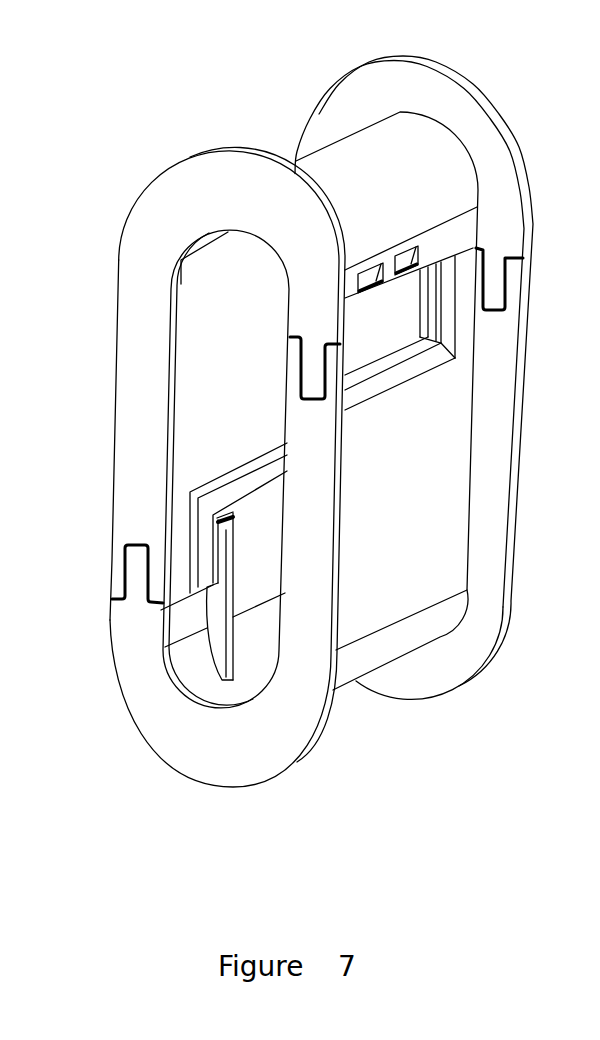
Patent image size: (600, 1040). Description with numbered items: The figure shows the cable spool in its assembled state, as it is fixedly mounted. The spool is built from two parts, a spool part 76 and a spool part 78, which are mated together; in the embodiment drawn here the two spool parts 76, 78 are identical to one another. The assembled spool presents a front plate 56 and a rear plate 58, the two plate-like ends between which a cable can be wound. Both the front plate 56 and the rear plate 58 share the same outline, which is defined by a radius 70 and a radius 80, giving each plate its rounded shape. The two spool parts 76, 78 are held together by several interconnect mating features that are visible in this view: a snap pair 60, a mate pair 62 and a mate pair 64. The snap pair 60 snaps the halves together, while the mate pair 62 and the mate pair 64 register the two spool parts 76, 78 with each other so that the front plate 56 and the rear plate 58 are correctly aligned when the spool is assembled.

The front plate 56 is at (438, 66).
The rear plate 58 is at (158, 176).
The snap pair 60 is at (403, 262).
The mate pair 62 is at (428, 315).
The mate pair 64 is at (222, 545).
The radius 70 is at (224, 230).
The spool part 76 is at (106, 339).
The spool part 78 is at (487, 688).
The radius 80 is at (224, 710).